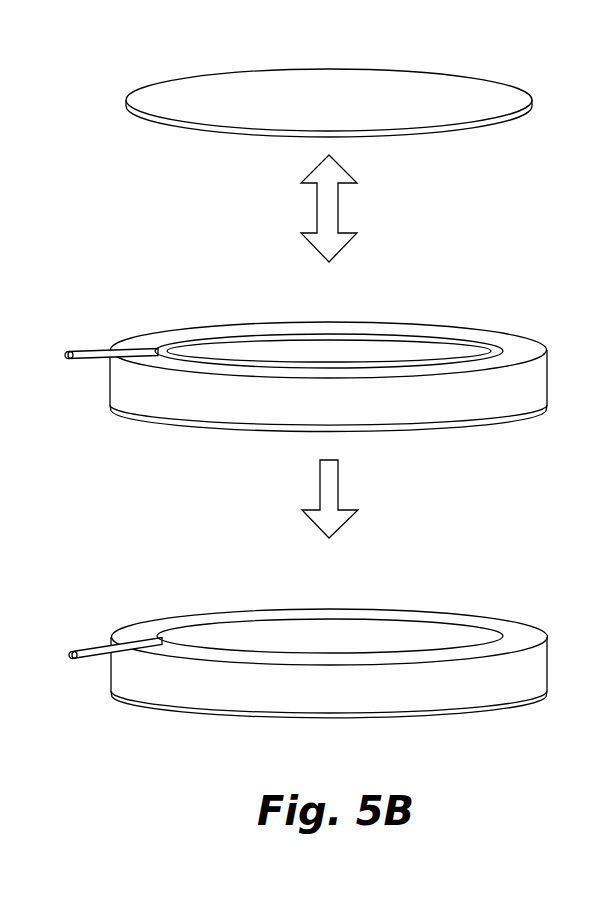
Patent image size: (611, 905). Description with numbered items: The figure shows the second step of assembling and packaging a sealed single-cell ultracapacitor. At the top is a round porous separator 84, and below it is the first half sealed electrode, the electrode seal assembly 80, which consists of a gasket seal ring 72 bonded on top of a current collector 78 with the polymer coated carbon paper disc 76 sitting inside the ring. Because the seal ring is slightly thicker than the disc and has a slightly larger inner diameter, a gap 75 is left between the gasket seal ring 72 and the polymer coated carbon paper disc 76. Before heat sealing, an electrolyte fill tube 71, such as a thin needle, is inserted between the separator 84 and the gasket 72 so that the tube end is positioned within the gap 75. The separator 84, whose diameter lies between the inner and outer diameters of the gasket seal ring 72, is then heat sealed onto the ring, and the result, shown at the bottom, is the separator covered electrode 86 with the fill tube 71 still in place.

The electrolyte fill tube 71 is at (95, 360).
The gasket seal ring 72 is at (130, 343).
The gap 75 is at (497, 345).
The polymer coated carbon paper disc 76 is at (250, 352).
The current collector 78 is at (478, 425).
The electrode seal assembly 80 is at (311, 365).
The porous separator 84 is at (142, 93).
The separator covered electrode 86 is at (330, 651).